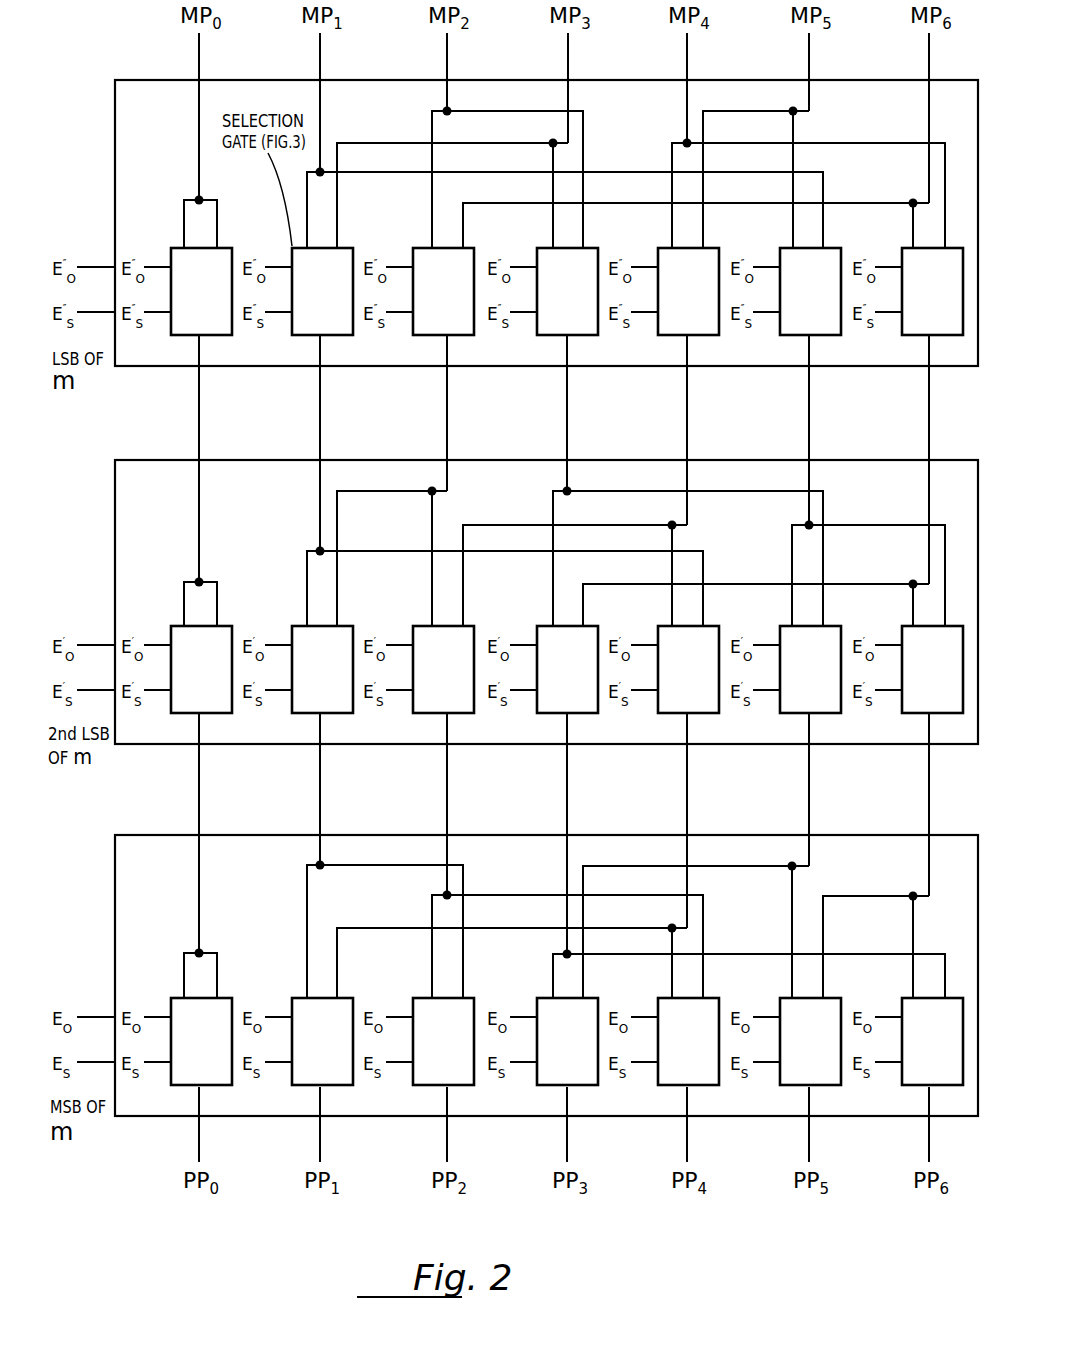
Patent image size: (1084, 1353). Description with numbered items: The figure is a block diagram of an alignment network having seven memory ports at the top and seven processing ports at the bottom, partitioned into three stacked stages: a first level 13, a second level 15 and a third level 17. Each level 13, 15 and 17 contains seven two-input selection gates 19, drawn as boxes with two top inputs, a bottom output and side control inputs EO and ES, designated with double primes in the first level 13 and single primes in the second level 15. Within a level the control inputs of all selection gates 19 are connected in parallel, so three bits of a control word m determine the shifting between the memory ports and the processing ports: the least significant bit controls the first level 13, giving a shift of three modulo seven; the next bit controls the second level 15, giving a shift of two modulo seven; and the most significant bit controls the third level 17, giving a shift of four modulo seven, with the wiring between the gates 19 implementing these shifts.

The first level 13 is at (115, 176).
The second level 15 is at (115, 570).
The third level 17 is at (115, 927).
The two-input selection gate 19 is at (555, 649).